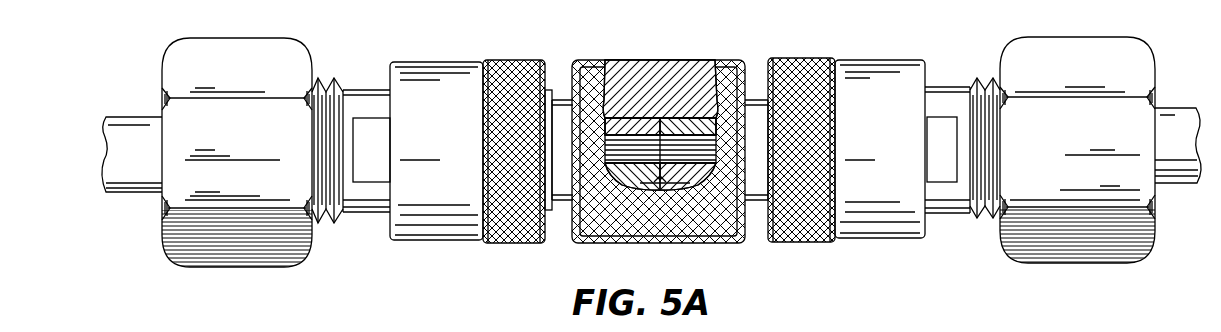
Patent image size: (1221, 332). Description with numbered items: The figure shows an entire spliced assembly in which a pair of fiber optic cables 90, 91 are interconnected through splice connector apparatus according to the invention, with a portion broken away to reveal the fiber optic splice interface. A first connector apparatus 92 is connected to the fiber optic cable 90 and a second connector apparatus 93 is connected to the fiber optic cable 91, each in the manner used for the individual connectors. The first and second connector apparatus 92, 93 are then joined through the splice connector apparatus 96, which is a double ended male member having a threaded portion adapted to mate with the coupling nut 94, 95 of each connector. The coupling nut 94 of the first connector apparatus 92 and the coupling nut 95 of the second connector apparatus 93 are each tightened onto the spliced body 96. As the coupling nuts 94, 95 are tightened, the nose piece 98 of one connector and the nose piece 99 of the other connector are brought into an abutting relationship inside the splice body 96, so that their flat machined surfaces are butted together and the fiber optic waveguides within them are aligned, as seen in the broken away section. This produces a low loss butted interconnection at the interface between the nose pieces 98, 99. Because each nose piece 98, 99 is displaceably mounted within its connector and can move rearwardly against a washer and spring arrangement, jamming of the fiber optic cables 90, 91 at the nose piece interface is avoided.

The fiber optic cable 90 is at (140, 197).
The fiber optic cable 91 is at (1175, 118).
The first connector apparatus 92 is at (153, 36).
The second connector apparatus 93 is at (1153, 34).
The coupling nut 94 is at (462, 243).
The coupling nut 95 is at (795, 243).
The splice connector apparatus 96 is at (658, 149).
The nose piece 98 is at (640, 137).
The nose piece 99 is at (682, 135).